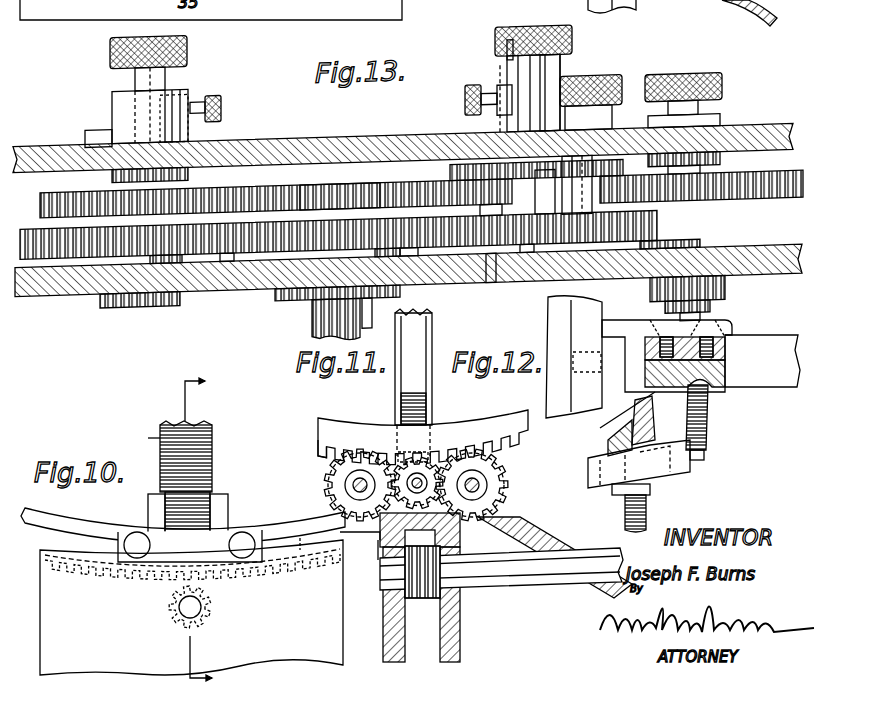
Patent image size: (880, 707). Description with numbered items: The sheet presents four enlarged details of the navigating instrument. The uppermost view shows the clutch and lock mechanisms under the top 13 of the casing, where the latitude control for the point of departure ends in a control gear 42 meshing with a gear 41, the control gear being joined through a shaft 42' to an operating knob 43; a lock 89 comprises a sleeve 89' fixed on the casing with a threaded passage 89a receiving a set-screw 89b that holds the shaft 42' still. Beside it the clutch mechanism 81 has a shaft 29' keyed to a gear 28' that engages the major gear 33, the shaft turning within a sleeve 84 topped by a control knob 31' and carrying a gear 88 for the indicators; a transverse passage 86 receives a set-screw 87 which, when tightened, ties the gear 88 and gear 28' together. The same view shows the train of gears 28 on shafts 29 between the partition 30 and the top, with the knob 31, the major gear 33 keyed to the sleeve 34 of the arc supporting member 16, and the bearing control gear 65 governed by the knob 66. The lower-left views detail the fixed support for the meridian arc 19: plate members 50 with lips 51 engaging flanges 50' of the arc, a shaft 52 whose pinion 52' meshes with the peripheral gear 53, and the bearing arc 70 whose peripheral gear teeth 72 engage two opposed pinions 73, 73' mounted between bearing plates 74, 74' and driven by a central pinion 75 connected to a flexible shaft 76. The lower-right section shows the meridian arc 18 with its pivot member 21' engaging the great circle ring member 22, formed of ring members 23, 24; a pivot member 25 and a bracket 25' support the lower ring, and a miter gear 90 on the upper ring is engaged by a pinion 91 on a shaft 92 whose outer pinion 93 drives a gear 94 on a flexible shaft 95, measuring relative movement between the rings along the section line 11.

In FIG. 13, the top 13 is at (340, 147).
In FIG. 13, the operating knob or button 43 is at (187, 53).
In FIG. 13, the shaft 42' is at (121, 106).
In FIG. 13, the lock 89 is at (169, 100).
In FIG. 13, the threaded passage 89a is at (190, 96).
In FIG. 13, the set-screw 89b is at (222, 114).
In FIG. 13, the sleeve 89' is at (173, 181).
In FIG. 13, the control gear 42 is at (261, 249).
In FIG. 13, the gear 41 is at (338, 205).
In FIG. 13, the gear 88 is at (450, 186).
In FIG. 13, the sleeve 84 is at (508, 72).
In FIG. 13, the shaft 29' is at (473, 86).
In FIG. 13, the transverse passage 86 is at (497, 112).
In FIG. 13, the set-screw 87 is at (465, 116).
In FIG. 13, the control knob 31' is at (533, 66).
In FIG. 13, the clutch mechanism 81 is at (567, 92).
In FIG. 13, the knob or control button 31 is at (594, 92).
In FIG. 13, the control button or knob 66 is at (722, 106).
In FIG. 13, the pivot member 25 is at (537, 192).
In FIG. 13, the shaft 29 is at (341, 243).
In FIG. 13, the control gear 65 is at (770, 222).
In FIG. 13, the train of gears 28 is at (301, 290).
In FIG. 13, the arc supporting member 16 is at (312, 320).
In FIG. 13, the sleeve 34 is at (376, 312).
In FIG. 13, the major gear 33 is at (408, 268).
In FIG. 13, the diaphragm plate or partition 30 is at (490, 290).
In FIG. 13, the gear 28' is at (520, 275).
In FIG. 11, the meridian arc 19 is at (432, 407).
In FIG. 11, the bearing arc 70 is at (348, 425).
In FIG. 10, the bearing arc 70 is at (163, 447).
In FIG. 11, the peripheral gear teeth 72 is at (318, 446).
In FIG. 10, the peripheral gear teeth 72 is at (148, 438).
In FIG. 11, the central pinion 75 is at (414, 458).
In FIG. 11, the pinion 73 is at (340, 485).
In FIG. 10, the pinion 73 is at (215, 518).
In FIG. 11, the pinion 73' is at (484, 485).
In FIG. 11, the bearing plate 74 is at (356, 484).
In FIG. 10, the bearing plate 74 is at (230, 506).
In FIG. 10, the bearing plate 74' is at (137, 516).
In FIG. 11, the flexible shaft 76 is at (544, 552).
In FIG. 11, the plate members 50 is at (424, 605).
In FIG. 10, the plate members 50 is at (191, 607).
In FIG. 11, the flanges 50' is at (437, 533).
In FIG. 10, the flanges 50' is at (183, 535).
In FIG. 11, the lips 51 is at (378, 535).
In FIG. 10, the lips 51 is at (301, 535).
In FIG. 11, the peripheral gear 53 is at (380, 562).
In FIG. 10, the peripheral gear 53 is at (72, 578).
In FIG. 11, the shaft 52 is at (501, 589).
In FIG. 10, the shaft 52 is at (218, 613).
In FIG. 11, the pinion 52' is at (422, 597).
In FIG. 10, the pinion 52' is at (167, 609).
In FIG. 12, the meridian arc 18 is at (548, 384).
In FIG. 12, the pivot member 21' is at (667, 344).
In FIG. 12, the ring member 23 is at (706, 362).
In FIG. 12, the great circle ring member 22 is at (766, 426).
In FIG. 12, the miter gear 90 is at (707, 395).
In FIG. 12, the pinion 91 is at (700, 452).
In FIG. 12, the pinion 93 is at (628, 420).
In FIG. 12, the gear 94 is at (610, 447).
In FIG. 12, the ring member 24 is at (615, 418).
In FIG. 12, the shaft 92 is at (678, 472).
In FIG. 12, the pivot member 25' is at (645, 502).
In FIG. 12, the flexible shaft 95 is at (625, 519).
In FIG. 10, the section line 11 is at (211, 532).